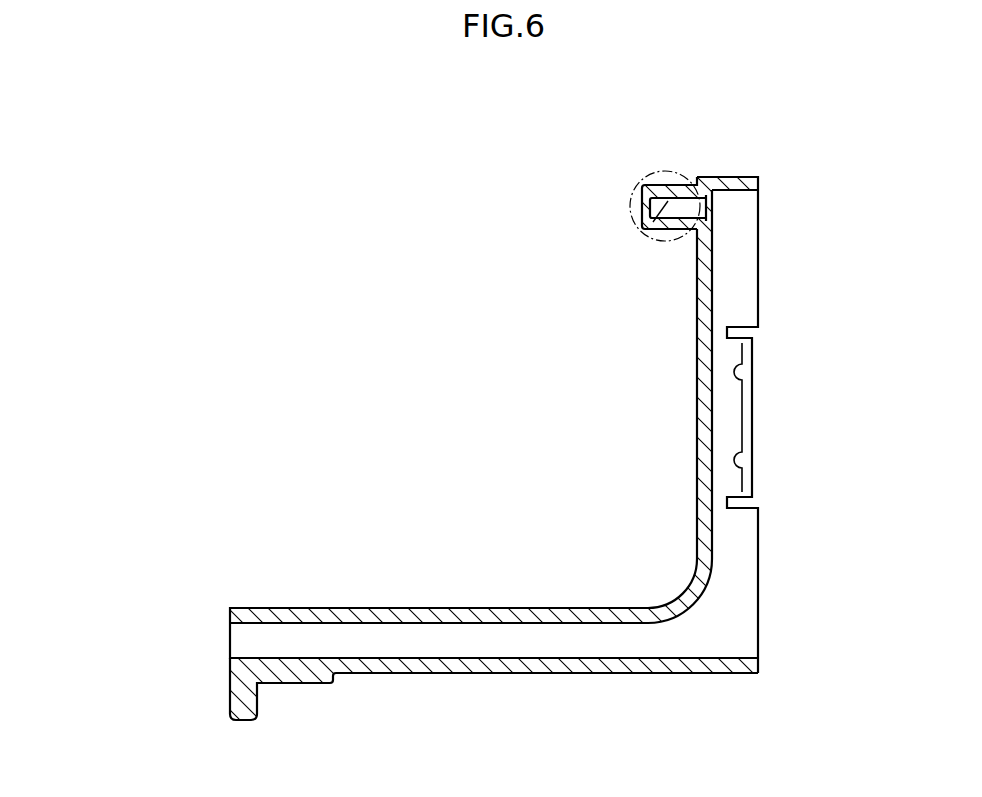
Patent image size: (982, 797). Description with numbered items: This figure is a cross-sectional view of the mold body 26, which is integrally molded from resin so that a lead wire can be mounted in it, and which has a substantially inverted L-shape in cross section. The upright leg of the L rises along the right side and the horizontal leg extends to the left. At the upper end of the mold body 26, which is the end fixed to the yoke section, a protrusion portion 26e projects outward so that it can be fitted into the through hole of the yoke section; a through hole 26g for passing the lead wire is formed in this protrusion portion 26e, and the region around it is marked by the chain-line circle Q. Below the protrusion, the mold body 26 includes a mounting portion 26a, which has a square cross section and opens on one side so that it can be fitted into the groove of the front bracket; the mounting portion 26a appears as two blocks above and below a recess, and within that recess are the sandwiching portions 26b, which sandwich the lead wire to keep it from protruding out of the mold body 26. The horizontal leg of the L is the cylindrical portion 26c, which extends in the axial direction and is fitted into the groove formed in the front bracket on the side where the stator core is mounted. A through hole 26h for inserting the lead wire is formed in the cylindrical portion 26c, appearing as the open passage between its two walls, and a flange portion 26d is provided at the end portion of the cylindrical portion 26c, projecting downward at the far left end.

The mold body 26 is at (787, 317).
The mounting portion 26a is at (738, 245).
The sandwiching portion 26b is at (748, 440).
The cylindrical portion 26c is at (422, 612).
The flange portion 26d is at (255, 712).
The protrusion portion 26e is at (682, 162).
The through hole 26g is at (660, 216).
The through hole 26h is at (257, 638).
The detail region Q is at (644, 232).